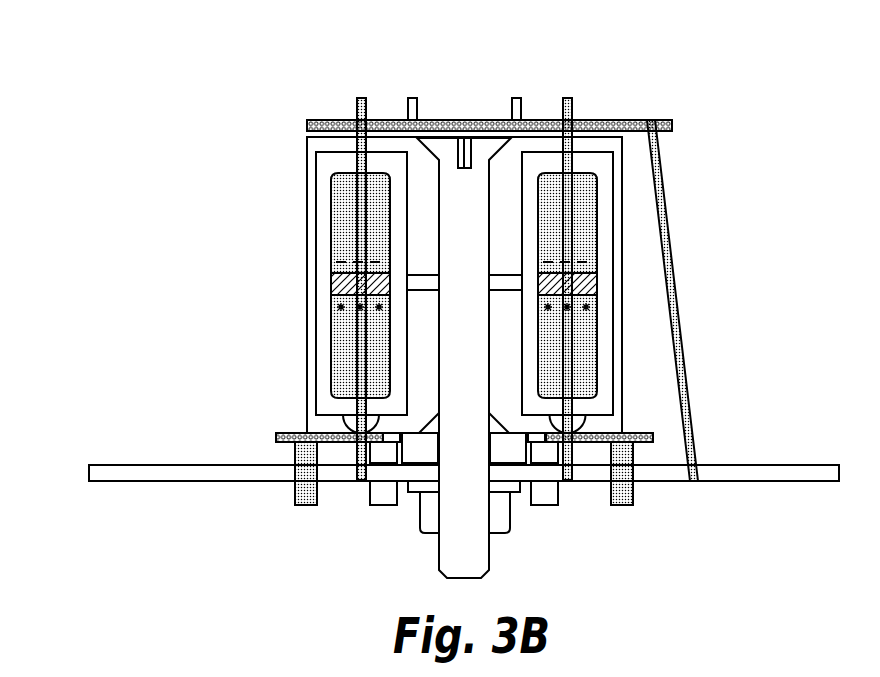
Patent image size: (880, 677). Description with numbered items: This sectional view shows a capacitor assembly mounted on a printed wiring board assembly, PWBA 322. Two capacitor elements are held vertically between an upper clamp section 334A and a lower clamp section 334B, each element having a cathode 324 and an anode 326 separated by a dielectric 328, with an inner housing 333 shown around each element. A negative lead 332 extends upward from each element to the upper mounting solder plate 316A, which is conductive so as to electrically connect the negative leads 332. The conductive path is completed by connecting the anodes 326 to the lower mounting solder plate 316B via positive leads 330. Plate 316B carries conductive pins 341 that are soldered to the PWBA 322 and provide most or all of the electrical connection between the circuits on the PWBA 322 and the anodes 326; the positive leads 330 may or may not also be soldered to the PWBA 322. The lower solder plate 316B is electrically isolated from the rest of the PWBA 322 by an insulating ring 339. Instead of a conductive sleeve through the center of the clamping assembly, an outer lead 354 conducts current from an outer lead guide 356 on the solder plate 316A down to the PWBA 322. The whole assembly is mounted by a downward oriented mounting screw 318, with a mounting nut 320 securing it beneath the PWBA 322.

The upper mounting solder plate 316A is at (297, 113).
The lower mounting solder plate 316B is at (268, 429).
The mounting screw 318 is at (448, 180).
The mounting nut 320 is at (500, 523).
The PWBA 322 is at (110, 464).
The cathode 324 is at (464, 223).
The anode 326 is at (464, 346).
The dielectric 328 is at (355, 284).
The positive lead 330 is at (363, 481).
The negative lead 332 is at (357, 113).
The inner housing 333 is at (330, 165).
The upper clamp section 334A is at (298, 163).
The lower clamp section 334B is at (298, 383).
The insulating ring 339 is at (418, 449).
The conductive pins 341 is at (301, 505).
The outer lead 354 is at (666, 222).
The outer lead guide 356 is at (673, 126).